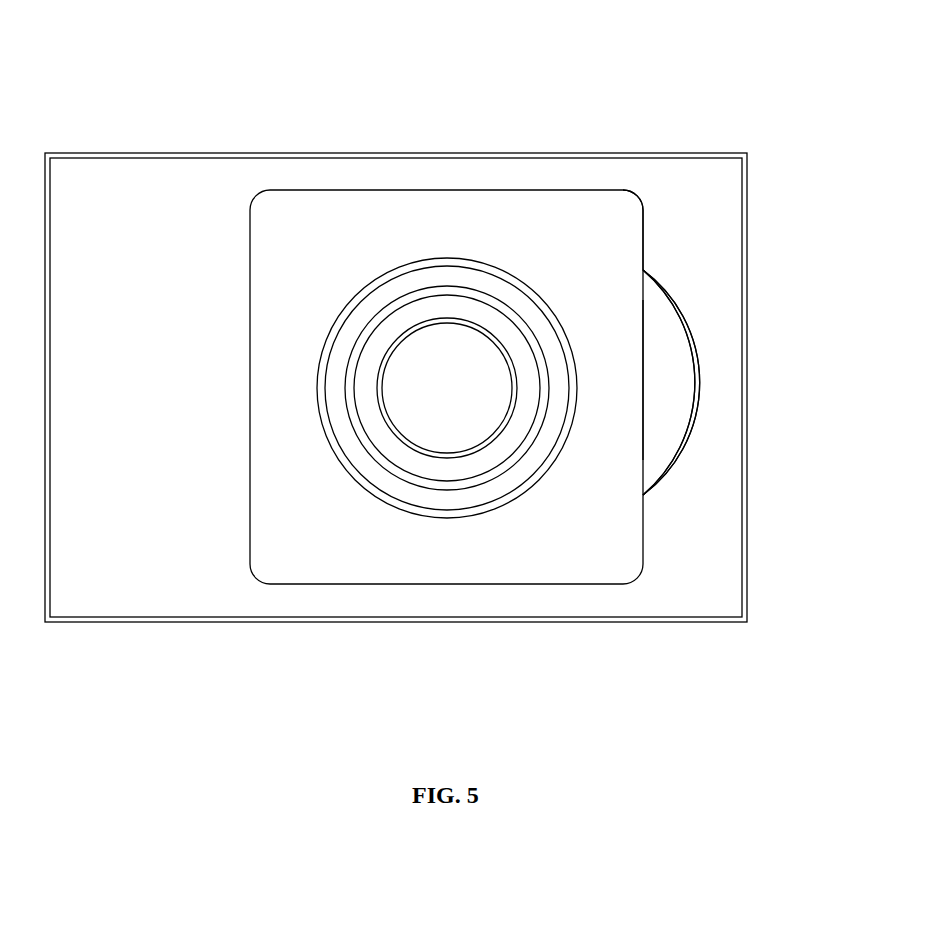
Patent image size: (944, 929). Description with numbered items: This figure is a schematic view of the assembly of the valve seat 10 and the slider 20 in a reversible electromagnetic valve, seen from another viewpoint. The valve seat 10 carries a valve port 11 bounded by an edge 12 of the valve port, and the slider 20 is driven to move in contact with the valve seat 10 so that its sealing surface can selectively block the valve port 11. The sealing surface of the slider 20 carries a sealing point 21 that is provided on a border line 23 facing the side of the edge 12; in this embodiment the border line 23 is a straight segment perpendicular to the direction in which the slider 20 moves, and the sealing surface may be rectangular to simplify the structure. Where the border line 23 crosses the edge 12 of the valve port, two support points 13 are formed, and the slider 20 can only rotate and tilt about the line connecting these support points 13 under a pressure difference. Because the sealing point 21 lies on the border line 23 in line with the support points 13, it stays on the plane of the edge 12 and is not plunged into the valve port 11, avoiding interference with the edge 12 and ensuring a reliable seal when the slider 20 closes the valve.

The valve seat 10 is at (163, 547).
The valve port 11 is at (650, 448).
The edge of the valve port 12 is at (700, 383).
The support points 13 is at (643, 270).
The slider 20 is at (498, 550).
The sealing point 21 is at (643, 373).
The border line 23 is at (643, 243).